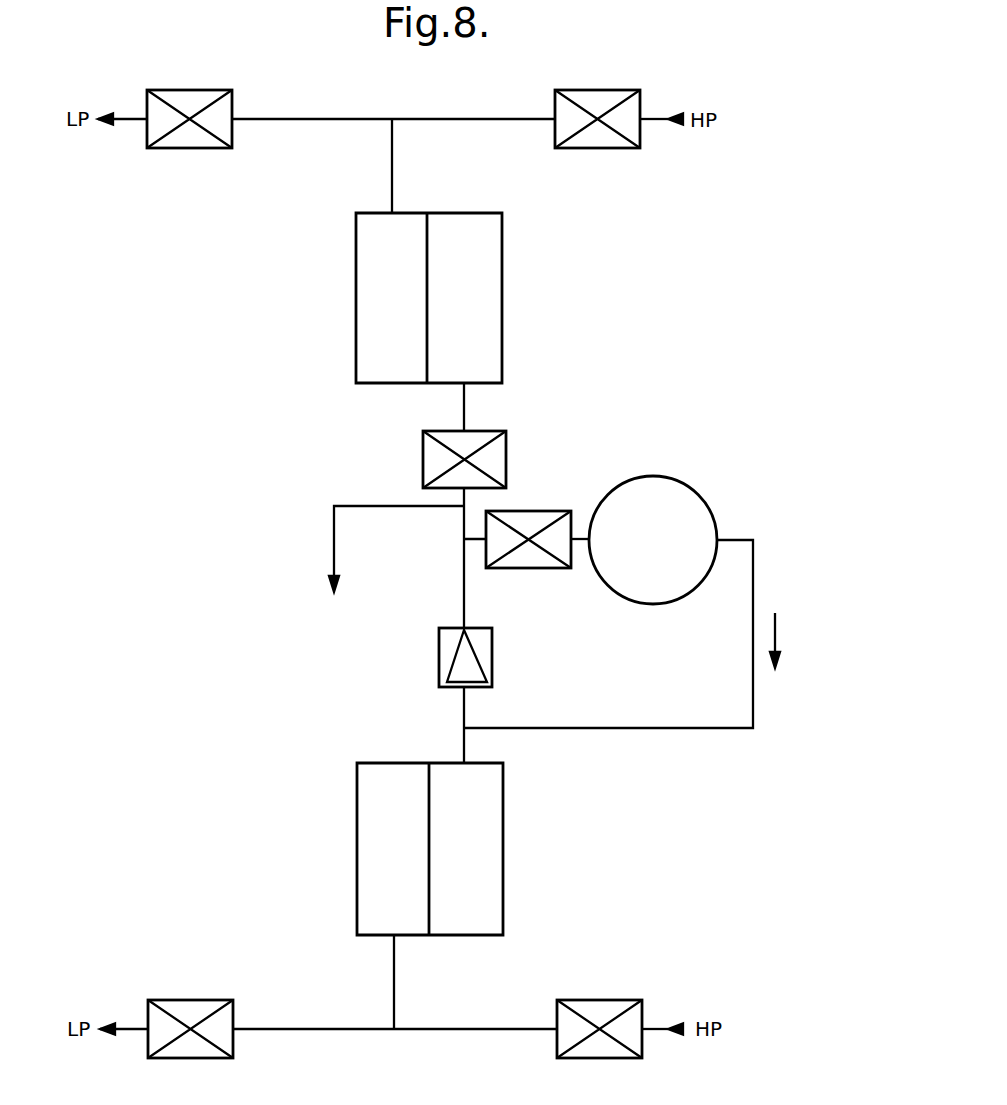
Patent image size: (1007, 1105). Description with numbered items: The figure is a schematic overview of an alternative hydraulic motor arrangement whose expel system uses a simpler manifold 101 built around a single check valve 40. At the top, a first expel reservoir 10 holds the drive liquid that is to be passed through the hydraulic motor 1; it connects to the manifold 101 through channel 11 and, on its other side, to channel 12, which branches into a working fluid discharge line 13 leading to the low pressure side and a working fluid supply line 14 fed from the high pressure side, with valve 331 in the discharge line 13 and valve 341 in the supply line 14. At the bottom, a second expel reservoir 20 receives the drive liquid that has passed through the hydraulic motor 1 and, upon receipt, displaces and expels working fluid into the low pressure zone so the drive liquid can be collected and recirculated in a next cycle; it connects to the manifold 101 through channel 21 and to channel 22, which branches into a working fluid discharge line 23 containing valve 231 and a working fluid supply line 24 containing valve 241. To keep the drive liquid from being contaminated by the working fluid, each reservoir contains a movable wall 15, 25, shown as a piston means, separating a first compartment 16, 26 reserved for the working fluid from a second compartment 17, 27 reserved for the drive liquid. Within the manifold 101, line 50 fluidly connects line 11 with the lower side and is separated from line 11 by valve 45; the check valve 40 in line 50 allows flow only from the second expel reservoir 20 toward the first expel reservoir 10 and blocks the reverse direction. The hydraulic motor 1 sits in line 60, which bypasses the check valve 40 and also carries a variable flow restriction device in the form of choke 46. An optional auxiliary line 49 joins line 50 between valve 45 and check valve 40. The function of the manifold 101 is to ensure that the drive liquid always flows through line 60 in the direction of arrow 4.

The hydraulic motor 1 is at (660, 552).
The manifold 101 is at (677, 506).
The arrow 4 is at (777, 636).
The first expel reservoir 10 is at (431, 298).
The channel 11 is at (465, 405).
The channel 12 is at (392, 175).
The working fluid discharge line 13 is at (322, 119).
The working fluid supply line 14 is at (477, 119).
The movable wall 15 is at (427, 325).
The first compartment 16 is at (406, 262).
The second compartment 17 is at (477, 262).
The second expel reservoir 20 is at (430, 849).
The channel 21 is at (464, 746).
The channel 22 is at (395, 968).
The working fluid discharge line 23 is at (316, 1029).
The working fluid supply line 24 is at (488, 1029).
The movable wall 25 is at (429, 881).
The first compartment 26 is at (411, 815).
The second compartment 27 is at (479, 815).
The check valve 40 is at (455, 658).
The valve 45 is at (423, 450).
The choke 46 is at (534, 558).
The auxiliary line 49 is at (386, 506).
The line 50 is at (464, 588).
The line 60 is at (660, 728).
The valve 231 is at (201, 1000).
The valve 241 is at (609, 1000).
The valve 331 is at (193, 148).
The valve 341 is at (588, 148).